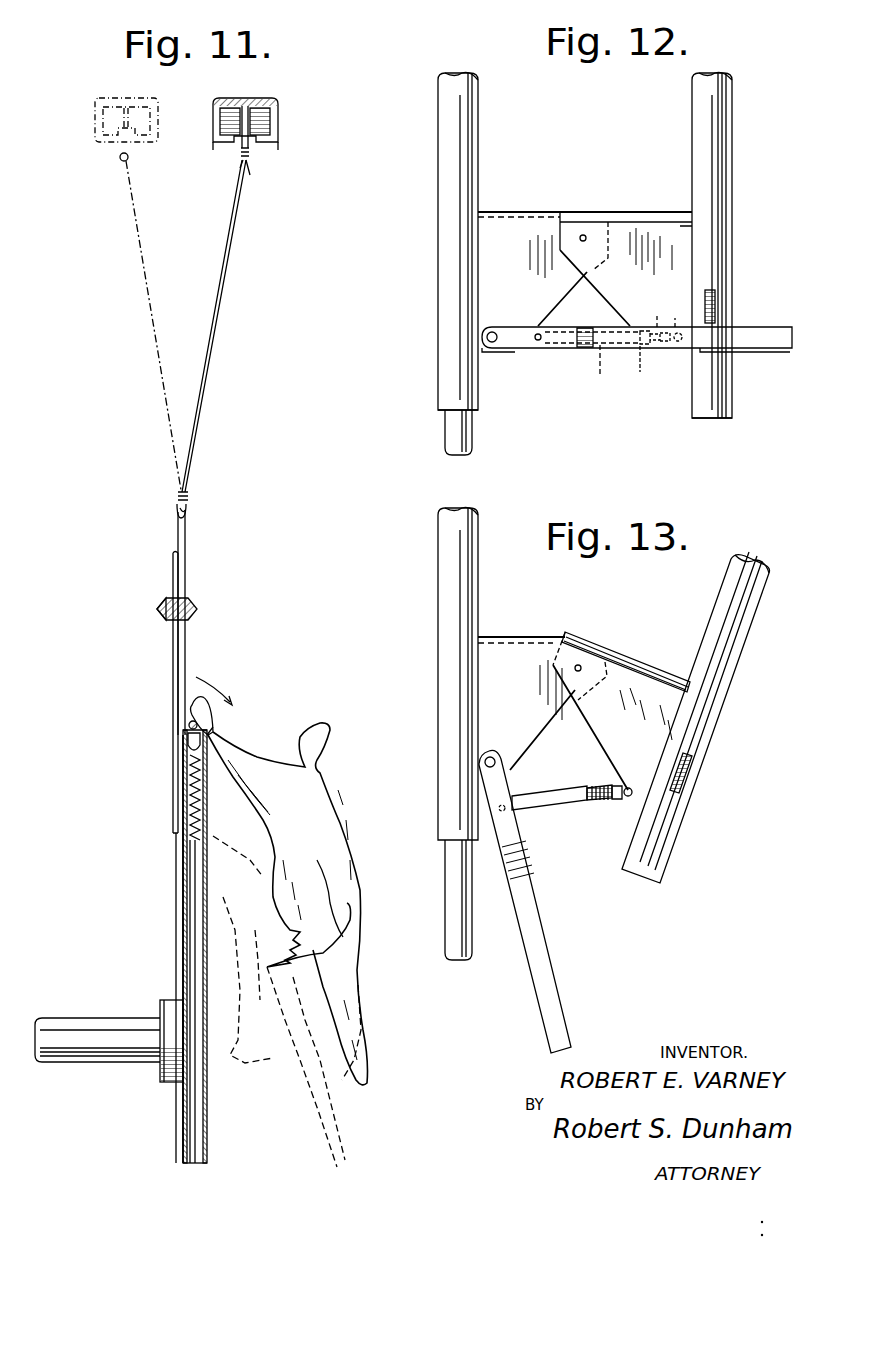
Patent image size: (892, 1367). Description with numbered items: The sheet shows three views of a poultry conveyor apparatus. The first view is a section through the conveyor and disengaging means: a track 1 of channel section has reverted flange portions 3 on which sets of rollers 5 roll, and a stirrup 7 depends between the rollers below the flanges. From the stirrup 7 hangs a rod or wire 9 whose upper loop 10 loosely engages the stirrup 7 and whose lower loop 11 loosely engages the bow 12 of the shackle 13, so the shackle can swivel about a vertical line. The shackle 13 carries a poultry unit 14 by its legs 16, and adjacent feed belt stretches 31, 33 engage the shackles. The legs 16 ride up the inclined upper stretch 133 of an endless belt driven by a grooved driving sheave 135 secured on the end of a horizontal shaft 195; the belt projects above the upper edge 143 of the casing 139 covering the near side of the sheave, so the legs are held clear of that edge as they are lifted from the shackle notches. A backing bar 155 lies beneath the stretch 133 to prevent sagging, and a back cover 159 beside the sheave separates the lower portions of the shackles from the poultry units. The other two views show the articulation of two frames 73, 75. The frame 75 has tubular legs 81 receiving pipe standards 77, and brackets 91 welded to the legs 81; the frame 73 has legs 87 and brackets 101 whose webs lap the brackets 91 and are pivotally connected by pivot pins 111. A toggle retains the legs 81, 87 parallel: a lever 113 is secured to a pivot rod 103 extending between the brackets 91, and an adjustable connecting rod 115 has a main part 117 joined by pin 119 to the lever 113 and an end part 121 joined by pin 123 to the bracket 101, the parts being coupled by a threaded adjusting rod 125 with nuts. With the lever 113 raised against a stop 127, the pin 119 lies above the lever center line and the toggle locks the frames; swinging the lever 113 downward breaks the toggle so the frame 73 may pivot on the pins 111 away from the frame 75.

In FIG. 11, the track 1 is at (270, 109).
In FIG. 11, the reverted flange portions 3 is at (226, 143).
In FIG. 11, the rollers 5 is at (222, 120).
In FIG. 11, the stirrup 7 is at (249, 142).
In FIG. 11, the rod or wire 9 is at (226, 280).
In FIG. 11, the upper loop 10 is at (250, 170).
In FIG. 11, the lower loop 11 is at (187, 506).
In FIG. 11, the bow of the shackle 12 is at (187, 533).
In FIG. 11, the shackle 13 is at (167, 661).
In FIG. 11, the poultry unit 14 is at (333, 843).
In FIG. 11, the legs of the poultry unit 16 is at (213, 732).
In FIG. 11, the belt stretch 31 is at (160, 601).
In FIG. 11, the belt stretch 33 is at (197, 607).
In FIG. 11, the upper stretch of the endless belt 133 is at (189, 724).
In FIG. 11, the driving sheave 135 is at (180, 920).
In FIG. 11, the casing 139 is at (210, 950).
In FIG. 11, the upper edge of the casing 143 is at (215, 722).
In FIG. 11, the backing bar 155 is at (187, 742).
In FIG. 11, the back cover 159 is at (180, 843).
In FIG. 11, the horizontal shaft 195 is at (118, 1035).
In FIG. 12, the frame 73 is at (734, 177).
In FIG. 13, the frame 73 is at (688, 832).
In FIG. 12, the frame 75 is at (430, 201).
In FIG. 13, the frame 75 is at (430, 749).
In FIG. 12, the standards 77 is at (470, 433).
In FIG. 13, the standards 77 is at (470, 910).
In FIG. 12, the tubular legs 81 is at (445, 396).
In FIG. 12, the legs 87 is at (725, 378).
In FIG. 12, the brackets 91 is at (520, 205).
In FIG. 13, the brackets 91 is at (513, 648).
In FIG. 12, the brackets 101 is at (652, 230).
In FIG. 13, the brackets 101 is at (647, 680).
In FIG. 12, the pivot rod 103 is at (495, 331).
In FIG. 13, the pivot rod 103 is at (492, 756).
In FIG. 12, the pivot pins 111 is at (585, 234).
In FIG. 13, the pivot pins 111 is at (581, 665).
In FIG. 12, the lever 113 is at (525, 344).
In FIG. 13, the lever 113 is at (528, 890).
In FIG. 12, the adjustable connecting rod 115 is at (600, 320).
In FIG. 13, the adjustable connecting rod 115 is at (549, 783).
In FIG. 12, the main part of the connecting rod 117 is at (592, 364).
In FIG. 13, the main part of the connecting rod 117 is at (565, 795).
In FIG. 12, the pin 119 is at (538, 332).
In FIG. 13, the pin 119 is at (505, 810).
In FIG. 12, the end part of the connecting rod 121 is at (655, 311).
In FIG. 13, the end part of the connecting rod 121 is at (620, 785).
In FIG. 12, the pin 123 is at (678, 316).
In FIG. 13, the pin 123 is at (626, 797).
In FIG. 12, the threaded adjusting rod 125 is at (649, 363).
In FIG. 13, the threaded adjusting rod 125 is at (594, 783).
In FIG. 12, the stop 127 is at (715, 312).
In FIG. 13, the stop 127 is at (690, 772).